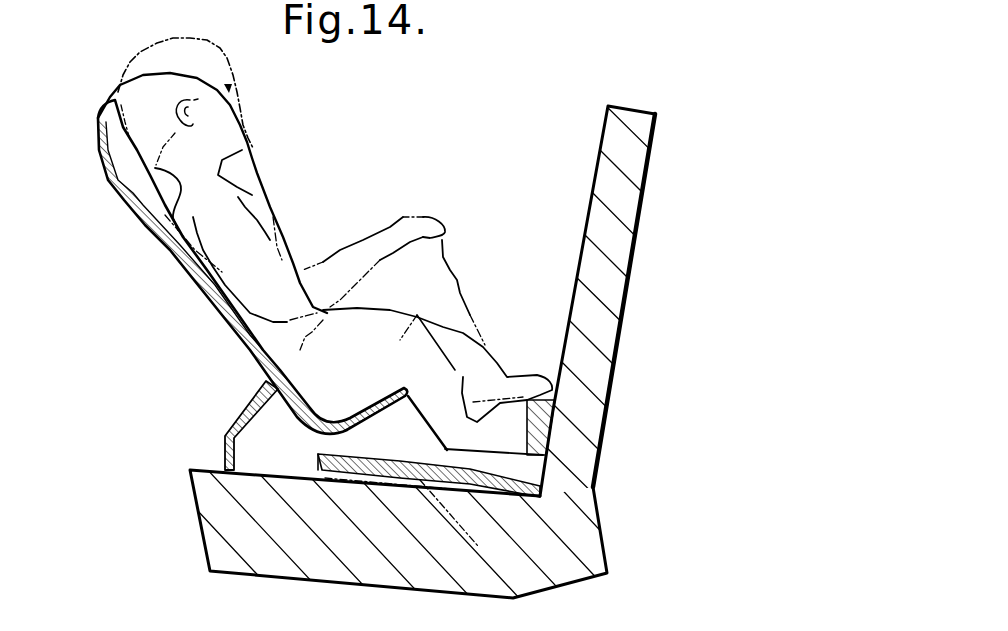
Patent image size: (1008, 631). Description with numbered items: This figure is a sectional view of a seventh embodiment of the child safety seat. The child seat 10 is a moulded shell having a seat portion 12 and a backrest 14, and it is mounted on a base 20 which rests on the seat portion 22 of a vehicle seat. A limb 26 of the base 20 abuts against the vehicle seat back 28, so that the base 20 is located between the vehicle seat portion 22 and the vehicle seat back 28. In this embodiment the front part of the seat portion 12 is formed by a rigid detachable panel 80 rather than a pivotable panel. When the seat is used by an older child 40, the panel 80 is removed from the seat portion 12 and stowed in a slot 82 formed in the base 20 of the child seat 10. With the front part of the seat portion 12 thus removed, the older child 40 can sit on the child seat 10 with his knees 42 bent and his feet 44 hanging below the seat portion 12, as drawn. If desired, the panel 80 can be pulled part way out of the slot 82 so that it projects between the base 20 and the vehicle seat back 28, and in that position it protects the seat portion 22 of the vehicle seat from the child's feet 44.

The seat body 10 is at (233, 278).
The seat portion 12 is at (362, 420).
The backrest 14 is at (186, 263).
The base 20 is at (225, 434).
The seat portion of a vehicle seat 22 is at (207, 521).
The limb 26 is at (547, 427).
The vehicle seat back 28 is at (617, 207).
The older child 40 is at (273, 217).
The knees 42 is at (452, 240).
The feet 44 is at (530, 363).
The rigid detachable panel 80 is at (490, 482).
The slot 82 is at (310, 473).